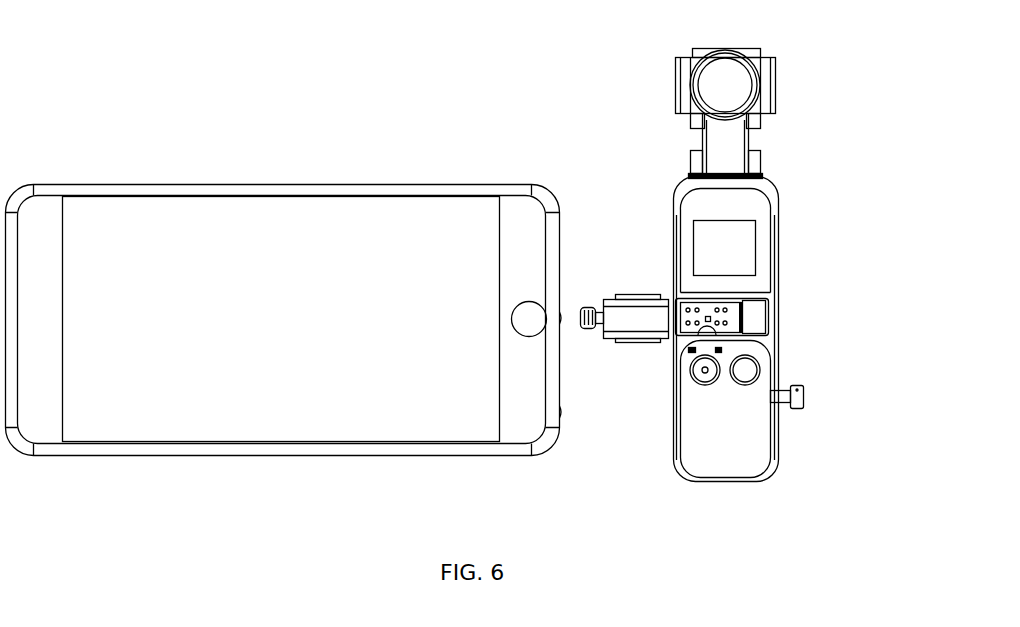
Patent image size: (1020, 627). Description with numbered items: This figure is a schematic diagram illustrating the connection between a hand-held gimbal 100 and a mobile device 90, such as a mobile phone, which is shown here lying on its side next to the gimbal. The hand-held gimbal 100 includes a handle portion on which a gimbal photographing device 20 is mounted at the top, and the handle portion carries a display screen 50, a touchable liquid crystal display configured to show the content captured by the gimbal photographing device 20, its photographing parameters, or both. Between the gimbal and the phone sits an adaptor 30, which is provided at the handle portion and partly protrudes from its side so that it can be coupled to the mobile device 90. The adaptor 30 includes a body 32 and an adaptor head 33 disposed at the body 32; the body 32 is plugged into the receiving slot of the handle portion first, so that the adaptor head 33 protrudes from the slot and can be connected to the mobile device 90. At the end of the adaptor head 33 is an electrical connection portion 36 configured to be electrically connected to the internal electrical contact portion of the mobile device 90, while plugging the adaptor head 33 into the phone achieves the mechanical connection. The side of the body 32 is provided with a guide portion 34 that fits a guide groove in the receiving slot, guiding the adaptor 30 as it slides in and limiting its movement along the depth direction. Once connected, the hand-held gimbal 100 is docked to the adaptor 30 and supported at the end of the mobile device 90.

The hand-held gimbal 100 is at (751, 265).
The gimbal photographing device 20 is at (650, 102).
The display screen 50 is at (725, 238).
The adaptor 30 is at (627, 339).
The body 32 is at (638, 320).
The adaptor head 33 is at (600, 322).
The guide portion 34 is at (633, 296).
The electrical connection portion 36 is at (588, 305).
The mobile device 90 is at (269, 386).